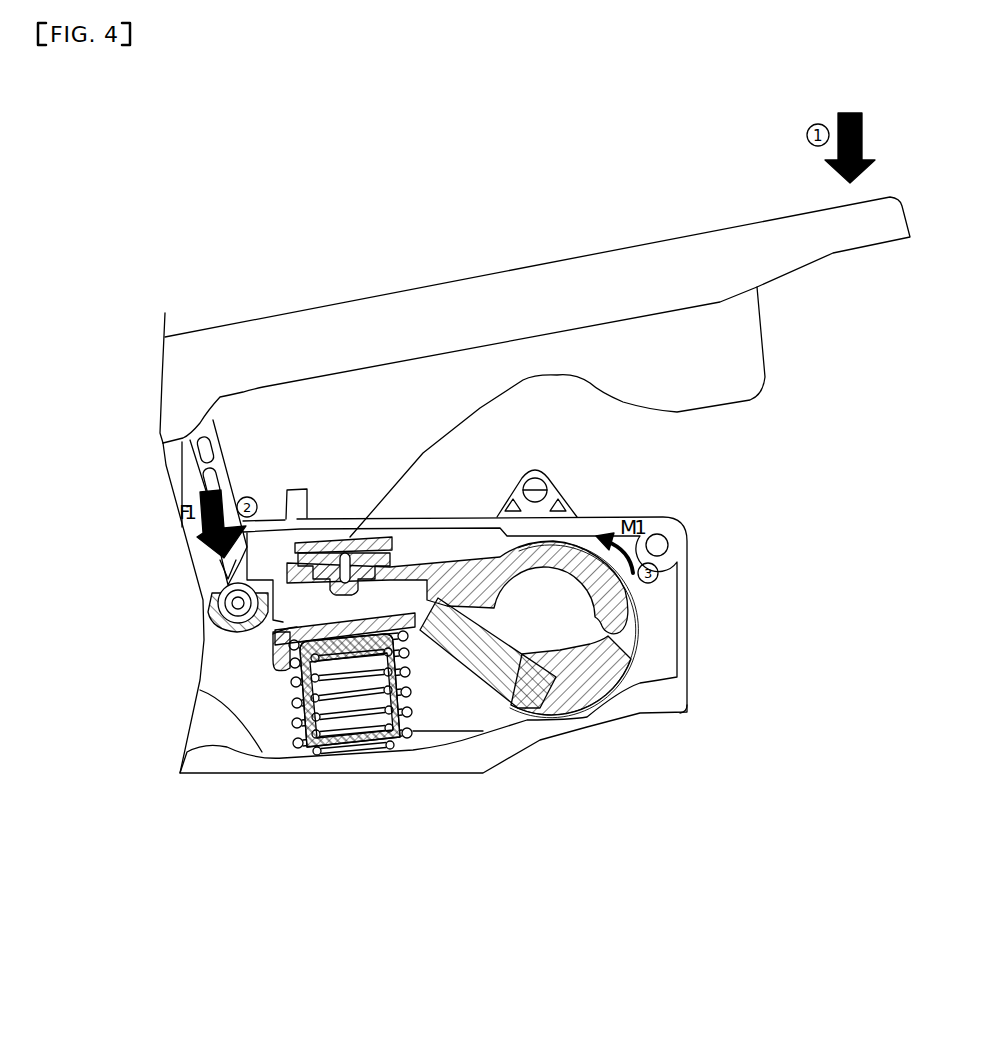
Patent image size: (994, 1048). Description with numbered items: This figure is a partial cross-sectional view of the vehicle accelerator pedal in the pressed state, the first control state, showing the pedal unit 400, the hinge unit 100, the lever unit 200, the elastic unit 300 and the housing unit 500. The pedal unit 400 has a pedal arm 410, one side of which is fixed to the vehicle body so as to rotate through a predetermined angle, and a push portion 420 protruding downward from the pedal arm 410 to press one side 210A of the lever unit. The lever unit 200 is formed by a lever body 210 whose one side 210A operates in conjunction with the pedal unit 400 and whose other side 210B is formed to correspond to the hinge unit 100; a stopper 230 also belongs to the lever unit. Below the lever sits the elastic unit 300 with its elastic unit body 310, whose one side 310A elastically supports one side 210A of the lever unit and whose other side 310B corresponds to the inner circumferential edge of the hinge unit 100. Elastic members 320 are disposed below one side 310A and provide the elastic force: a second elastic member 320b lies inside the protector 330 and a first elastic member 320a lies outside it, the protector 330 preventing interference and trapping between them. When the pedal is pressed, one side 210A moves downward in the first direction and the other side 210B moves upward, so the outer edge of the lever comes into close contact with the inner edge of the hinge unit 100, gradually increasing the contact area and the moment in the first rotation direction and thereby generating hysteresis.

The hinge unit 100 is at (627, 623).
The lever unit 200 is at (473, 470).
The lever body 210 is at (440, 573).
The one side of the lever unit 210A is at (212, 593).
The other side of the lever unit 210B is at (633, 587).
The stopper 230 is at (350, 537).
The elastic unit 300 is at (483, 838).
The elastic unit body 310 is at (457, 650).
The one side of the elastic unit 310A is at (273, 634).
The other side of the elastic unit 310B is at (573, 693).
The elastic members 320 is at (367, 837).
The first elastic member 320a is at (288, 737).
The second elastic member 320b is at (307, 713).
The protector 330 is at (405, 743).
The pedal unit 400 is at (392, 188).
The pedal arm 410 is at (352, 347).
The push portion 420 is at (230, 483).
The housing unit 500 is at (670, 707).